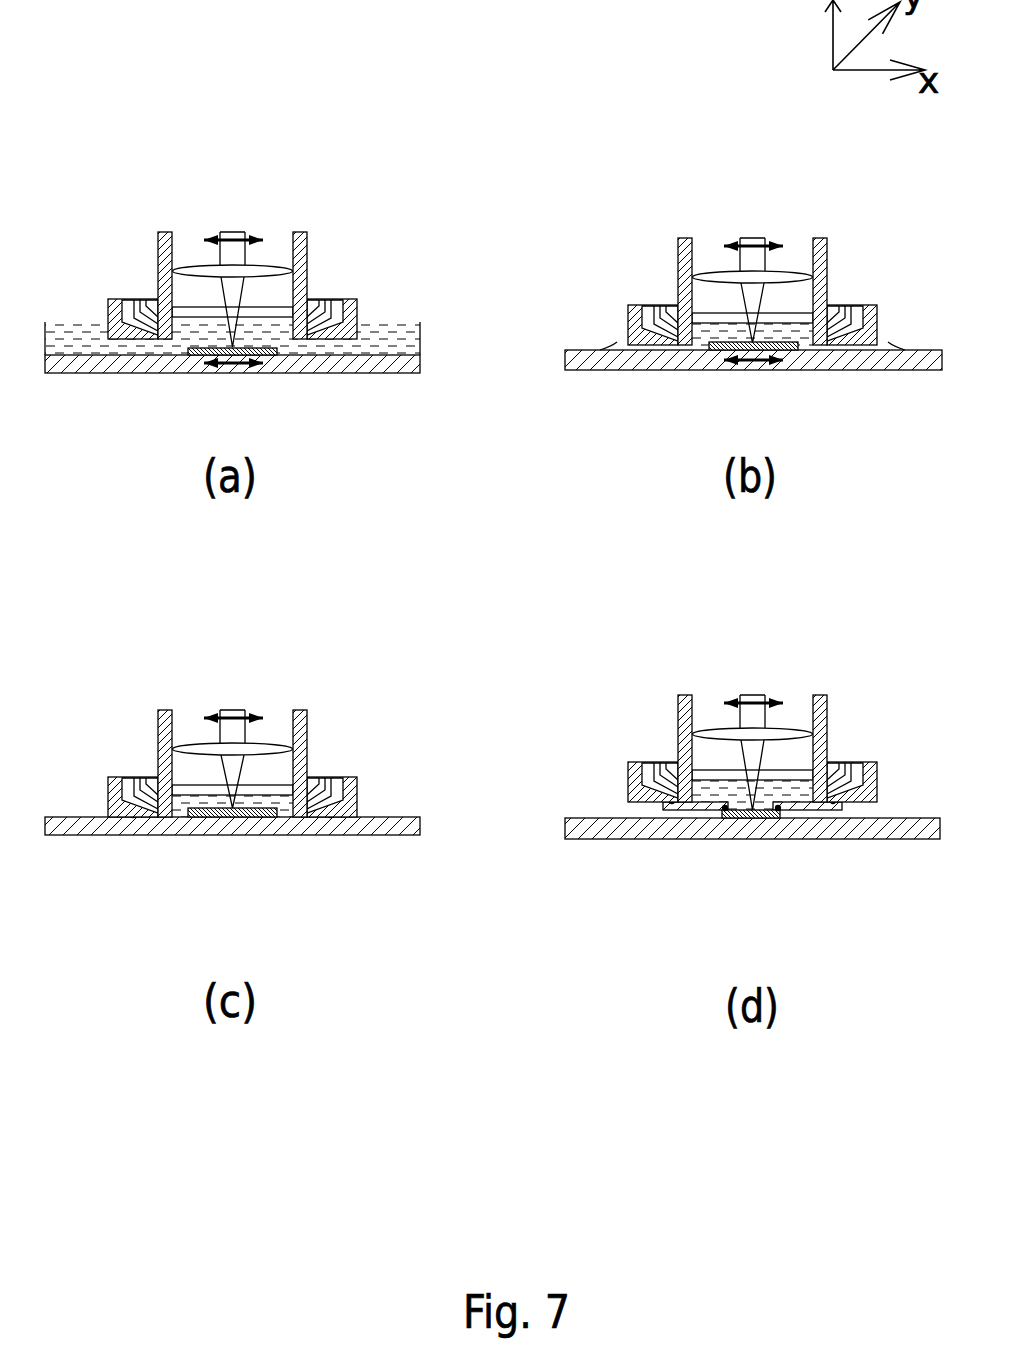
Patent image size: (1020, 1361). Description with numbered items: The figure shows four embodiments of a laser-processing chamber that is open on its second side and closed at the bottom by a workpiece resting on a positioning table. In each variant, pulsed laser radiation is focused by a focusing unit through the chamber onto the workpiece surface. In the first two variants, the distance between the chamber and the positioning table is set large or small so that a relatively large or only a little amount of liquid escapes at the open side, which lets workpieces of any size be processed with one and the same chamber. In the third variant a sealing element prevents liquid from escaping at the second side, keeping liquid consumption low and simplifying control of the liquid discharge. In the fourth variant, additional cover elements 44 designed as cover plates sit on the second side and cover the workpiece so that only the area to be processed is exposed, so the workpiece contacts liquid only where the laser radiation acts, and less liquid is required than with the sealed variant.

The cover elements 44 is at (753, 878).